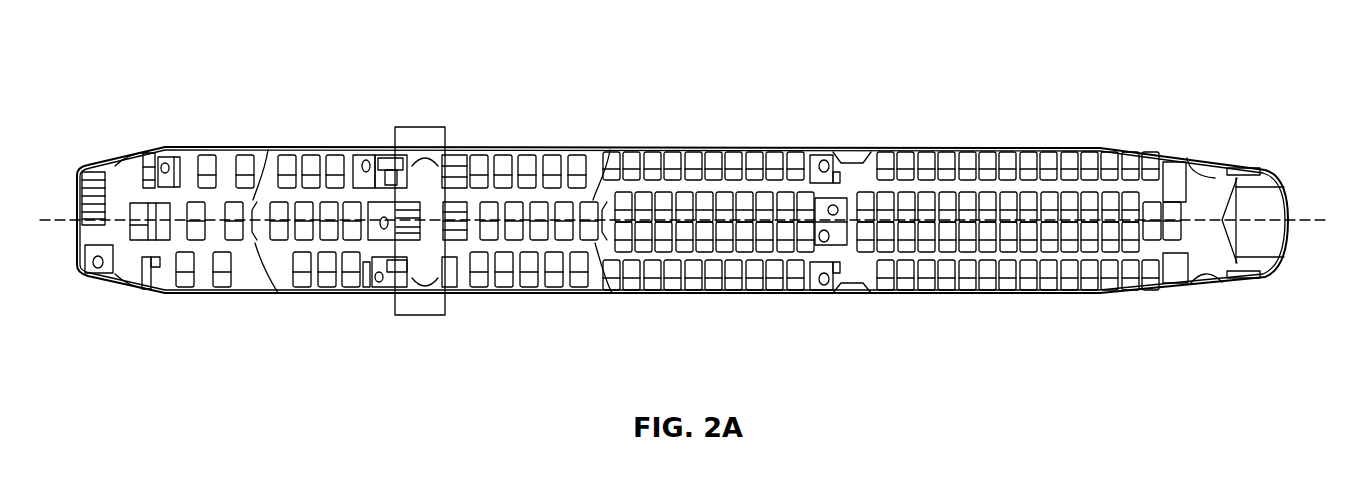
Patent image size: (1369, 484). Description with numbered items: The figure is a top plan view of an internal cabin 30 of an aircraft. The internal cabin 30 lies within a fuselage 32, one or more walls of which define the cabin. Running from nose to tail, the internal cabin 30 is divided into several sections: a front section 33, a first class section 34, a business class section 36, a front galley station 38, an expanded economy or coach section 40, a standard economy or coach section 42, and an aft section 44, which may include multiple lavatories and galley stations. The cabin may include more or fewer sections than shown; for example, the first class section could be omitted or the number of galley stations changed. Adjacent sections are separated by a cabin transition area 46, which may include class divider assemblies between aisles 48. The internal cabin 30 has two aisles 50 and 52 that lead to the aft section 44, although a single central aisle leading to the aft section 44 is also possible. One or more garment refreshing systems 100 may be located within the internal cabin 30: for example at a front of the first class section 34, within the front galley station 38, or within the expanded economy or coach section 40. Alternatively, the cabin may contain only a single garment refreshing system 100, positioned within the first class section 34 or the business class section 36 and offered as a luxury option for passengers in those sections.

The internal cabin 30 is at (215, 57).
The fuselage 32 is at (543, 113).
The front section 33 is at (138, 303).
The first class section 34 is at (228, 293).
The business class section 36 is at (302, 147).
The front galley station 38 is at (420, 310).
The expanded economy or coach section 40 is at (520, 293).
The standard economy or coach section 42 is at (648, 150).
The aft section 44 is at (1212, 178).
The cabin transition area 46 is at (150, 147).
The aisles 48 is at (375, 163).
The aisle 50 is at (1008, 188).
The aisle 52 is at (1027, 257).
The garment refreshing system 100 is at (458, 202).